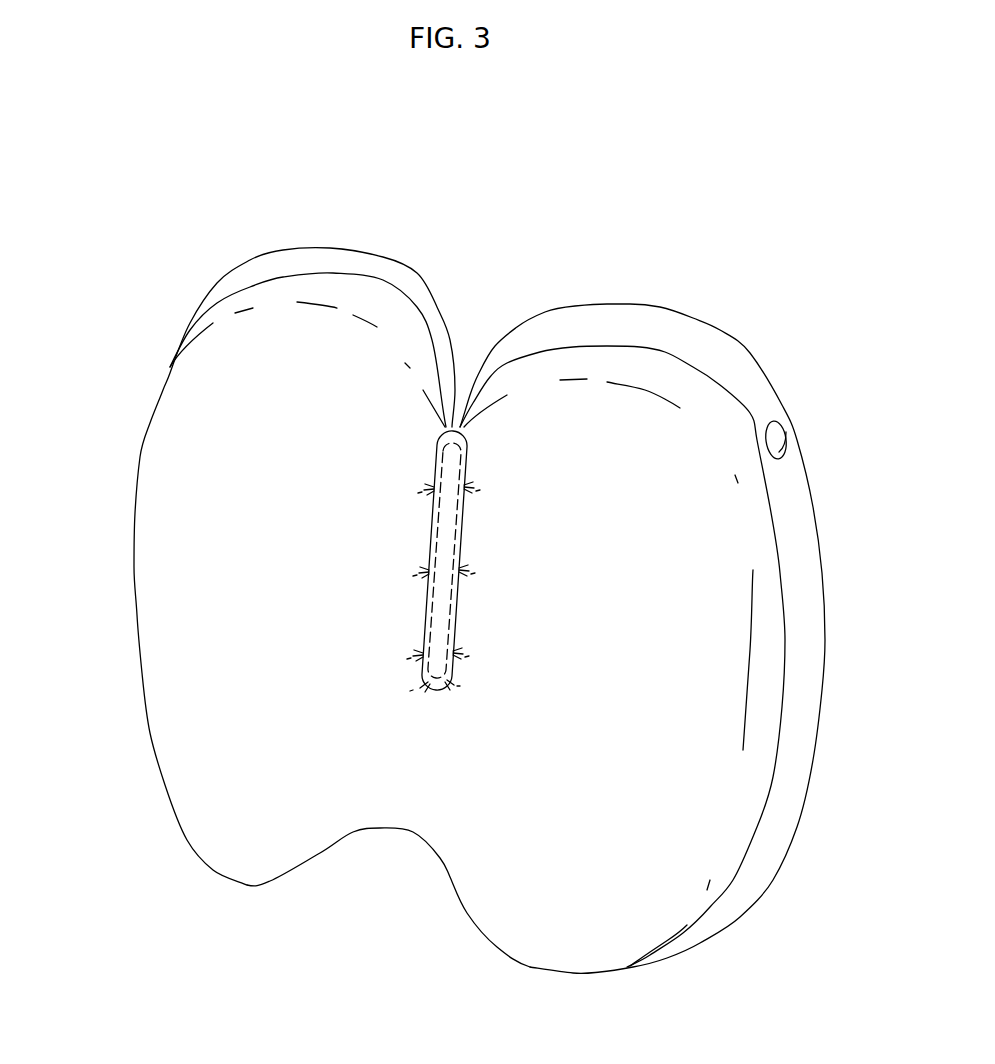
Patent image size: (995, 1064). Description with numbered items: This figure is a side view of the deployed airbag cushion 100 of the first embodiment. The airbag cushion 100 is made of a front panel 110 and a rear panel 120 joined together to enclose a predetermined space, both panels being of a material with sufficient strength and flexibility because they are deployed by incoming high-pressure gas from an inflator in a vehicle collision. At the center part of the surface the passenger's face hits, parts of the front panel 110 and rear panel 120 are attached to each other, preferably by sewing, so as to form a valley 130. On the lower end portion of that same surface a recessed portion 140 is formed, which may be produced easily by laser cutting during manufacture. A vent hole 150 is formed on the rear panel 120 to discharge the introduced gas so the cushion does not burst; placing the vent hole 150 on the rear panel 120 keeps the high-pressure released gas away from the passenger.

The airbag cushion 100 is at (108, 257).
The front panel 110 is at (243, 308).
The rear panel 120 is at (243, 282).
The valley 130 is at (398, 606).
The recessed portion 140 is at (390, 856).
The vent hole 150 is at (779, 437).